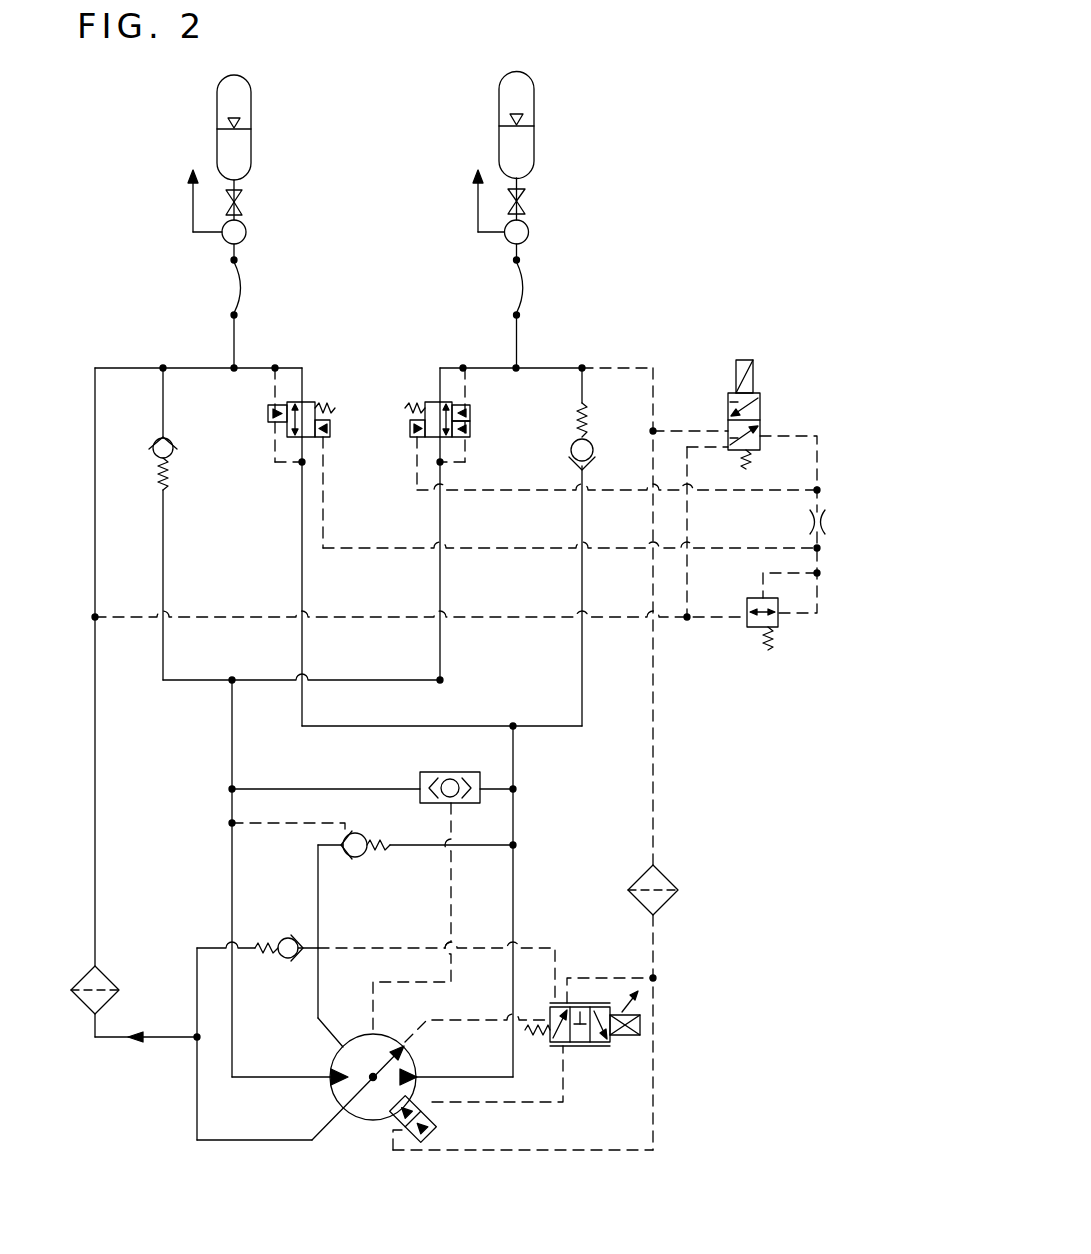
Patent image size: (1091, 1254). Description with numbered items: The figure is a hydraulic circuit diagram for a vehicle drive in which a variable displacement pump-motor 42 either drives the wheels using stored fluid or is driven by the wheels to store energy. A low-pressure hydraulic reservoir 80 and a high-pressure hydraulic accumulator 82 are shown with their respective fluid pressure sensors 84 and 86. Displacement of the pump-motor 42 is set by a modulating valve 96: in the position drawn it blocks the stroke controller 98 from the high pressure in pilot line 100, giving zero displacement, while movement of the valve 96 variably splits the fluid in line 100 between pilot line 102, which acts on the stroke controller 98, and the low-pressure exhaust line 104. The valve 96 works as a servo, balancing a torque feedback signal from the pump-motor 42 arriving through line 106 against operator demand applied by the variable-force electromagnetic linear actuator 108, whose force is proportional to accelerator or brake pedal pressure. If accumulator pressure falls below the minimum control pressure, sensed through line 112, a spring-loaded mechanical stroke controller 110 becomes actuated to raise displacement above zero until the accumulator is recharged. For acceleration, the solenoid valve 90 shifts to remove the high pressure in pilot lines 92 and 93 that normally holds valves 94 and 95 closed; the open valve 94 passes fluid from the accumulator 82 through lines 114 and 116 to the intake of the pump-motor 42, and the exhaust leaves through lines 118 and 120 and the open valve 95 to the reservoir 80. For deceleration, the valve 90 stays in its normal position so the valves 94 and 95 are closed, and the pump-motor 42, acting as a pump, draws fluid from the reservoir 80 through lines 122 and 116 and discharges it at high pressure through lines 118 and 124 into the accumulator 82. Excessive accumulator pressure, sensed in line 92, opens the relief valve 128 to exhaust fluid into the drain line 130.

The pump-motor 42 is at (357, 1120).
The low-pressure hydraulic reservoir 80 is at (252, 90).
The high-pressure hydraulic accumulator 82 is at (535, 86).
The fluid pressure sensor 84 is at (247, 238).
The fluid pressure sensor 86 is at (529, 238).
The solenoid valve 90 is at (760, 412).
The pilot line 92 is at (508, 490).
The pilot line 93 is at (485, 548).
The valve 94 is at (427, 402).
The valve 95 is at (308, 400).
The valve 96 is at (600, 1046).
The stroke controller 98 is at (436, 1122).
The pilot line 100 is at (598, 978).
The pilot line 102 is at (540, 1101).
The low-pressure exhaust line 104 is at (552, 947).
The line 106 is at (475, 1010).
The variable-force electromagnetic linear actuator 108 is at (640, 1025).
The spring-loaded mechanical stroke controller 110 is at (420, 1140).
The line 112 is at (532, 1150).
The line 114 is at (440, 655).
The line 116 is at (232, 1020).
The line 118 is at (513, 870).
The line 120 is at (302, 558).
The line 122 is at (163, 546).
The line 124 is at (582, 668).
The valve 128 is at (752, 628).
The drain line 130 is at (95, 703).